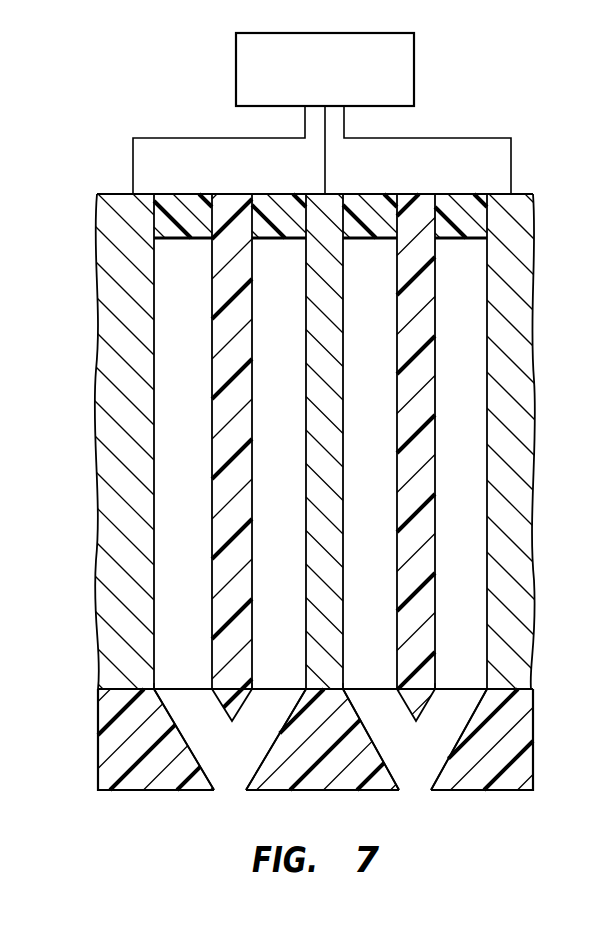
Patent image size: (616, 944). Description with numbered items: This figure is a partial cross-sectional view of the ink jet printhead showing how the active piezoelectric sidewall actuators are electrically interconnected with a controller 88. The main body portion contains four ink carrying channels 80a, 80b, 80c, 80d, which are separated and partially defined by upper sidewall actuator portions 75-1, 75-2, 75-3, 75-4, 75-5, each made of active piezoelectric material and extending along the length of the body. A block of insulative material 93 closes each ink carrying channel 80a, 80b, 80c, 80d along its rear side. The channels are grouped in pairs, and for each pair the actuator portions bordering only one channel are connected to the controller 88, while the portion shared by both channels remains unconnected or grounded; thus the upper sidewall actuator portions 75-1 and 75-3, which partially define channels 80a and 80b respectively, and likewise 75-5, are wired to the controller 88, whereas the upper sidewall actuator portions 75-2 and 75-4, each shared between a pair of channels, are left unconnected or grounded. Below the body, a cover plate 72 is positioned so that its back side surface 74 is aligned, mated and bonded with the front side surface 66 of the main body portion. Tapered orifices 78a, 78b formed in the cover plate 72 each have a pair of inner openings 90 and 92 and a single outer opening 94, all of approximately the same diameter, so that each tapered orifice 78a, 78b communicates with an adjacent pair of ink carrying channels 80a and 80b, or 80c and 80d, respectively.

The controller 88 is at (352, 34).
The block of insulative material 93 is at (468, 193).
The upper sidewall actuator portion 75-1 is at (96, 582).
The upper sidewall actuator portion 75-2 is at (207, 588).
The upper sidewall actuator portion 75-3 is at (300, 588).
The upper sidewall actuator portion 75-4 is at (392, 588).
The upper sidewall actuator portion 75-5 is at (483, 588).
The ink carrying channel 80a is at (205, 401).
The ink carrying channel 80b is at (300, 401).
The ink carrying channel 80c is at (392, 401).
The ink carrying channel 80d is at (483, 401).
The front side surface 66 is at (133, 688).
The inner opening 90 is at (343, 688).
The inner opening 92 is at (434, 688).
The cover plate 72 is at (97, 722).
The back side surface 74 is at (522, 705).
The tapered orifice 78a is at (230, 794).
The tapered orifice 78b is at (410, 794).
The outer opening 94 is at (456, 812).